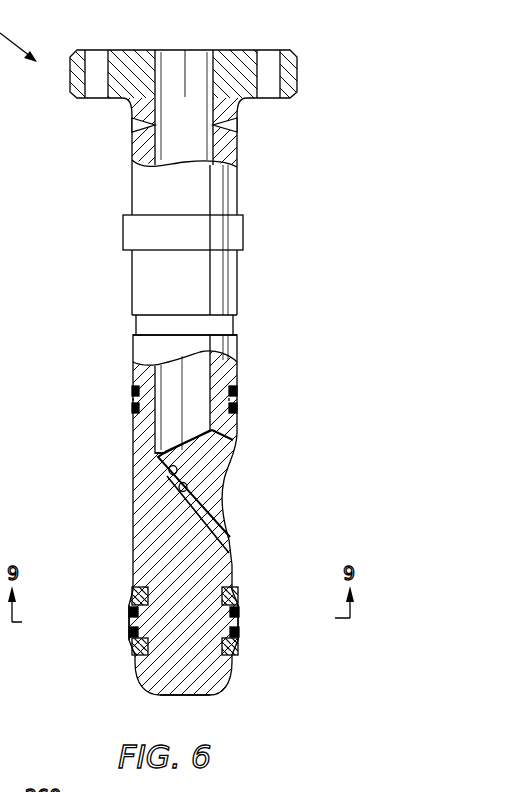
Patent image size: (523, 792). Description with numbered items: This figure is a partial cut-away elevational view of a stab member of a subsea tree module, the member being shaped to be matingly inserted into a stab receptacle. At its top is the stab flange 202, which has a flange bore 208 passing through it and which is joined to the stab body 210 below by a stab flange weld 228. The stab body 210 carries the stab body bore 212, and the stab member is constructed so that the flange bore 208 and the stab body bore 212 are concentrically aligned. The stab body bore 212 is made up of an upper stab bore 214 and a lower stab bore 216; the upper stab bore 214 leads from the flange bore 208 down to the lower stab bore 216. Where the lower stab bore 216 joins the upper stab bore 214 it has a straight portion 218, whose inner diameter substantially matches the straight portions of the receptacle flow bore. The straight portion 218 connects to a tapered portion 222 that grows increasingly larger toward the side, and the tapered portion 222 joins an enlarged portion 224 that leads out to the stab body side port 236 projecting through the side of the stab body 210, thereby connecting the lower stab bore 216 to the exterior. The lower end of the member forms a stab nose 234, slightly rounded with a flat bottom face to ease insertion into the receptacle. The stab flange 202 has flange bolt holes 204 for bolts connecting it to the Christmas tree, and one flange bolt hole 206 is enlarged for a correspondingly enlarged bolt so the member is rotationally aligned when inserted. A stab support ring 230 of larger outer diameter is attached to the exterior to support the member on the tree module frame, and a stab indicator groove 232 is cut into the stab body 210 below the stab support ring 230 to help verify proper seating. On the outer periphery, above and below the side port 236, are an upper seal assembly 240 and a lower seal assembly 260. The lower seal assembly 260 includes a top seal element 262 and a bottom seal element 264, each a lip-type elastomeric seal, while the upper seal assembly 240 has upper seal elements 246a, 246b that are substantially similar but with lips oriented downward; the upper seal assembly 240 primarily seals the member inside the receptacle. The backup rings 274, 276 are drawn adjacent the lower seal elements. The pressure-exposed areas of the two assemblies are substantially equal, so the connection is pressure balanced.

The stab flange 202 is at (290, 70).
The flange bolt holes 204 is at (270, 70).
The enlarged flange bolt hole 206 is at (102, 58).
The flange bore 208 is at (212, 70).
The stab body 210 is at (230, 190).
The stab body bore 212 is at (185, 142).
The upper stab bore 214 is at (200, 404).
The lower stab bore 216 is at (205, 452).
The straight portion 218 is at (166, 461).
The tapered portion 222 is at (168, 470).
The enlarged portion 224 is at (170, 492).
The stab flange weld 228 is at (132, 125).
The stab support ring 230 is at (238, 235).
The stab indicator groove 232 is at (228, 330).
The stab nose 234 is at (204, 697).
The stab body side port 236 is at (220, 488).
The upper seal assembly 240 is at (252, 400).
The upper seal element 246a is at (238, 390).
The upper seal element 246b is at (238, 408).
The lower seal assembly 260 is at (108, 633).
The top seal element 262 is at (238, 610).
The bottom seal element 264 is at (238, 631).
The backup ring 274 is at (235, 592).
The backup ring 276 is at (236, 650).